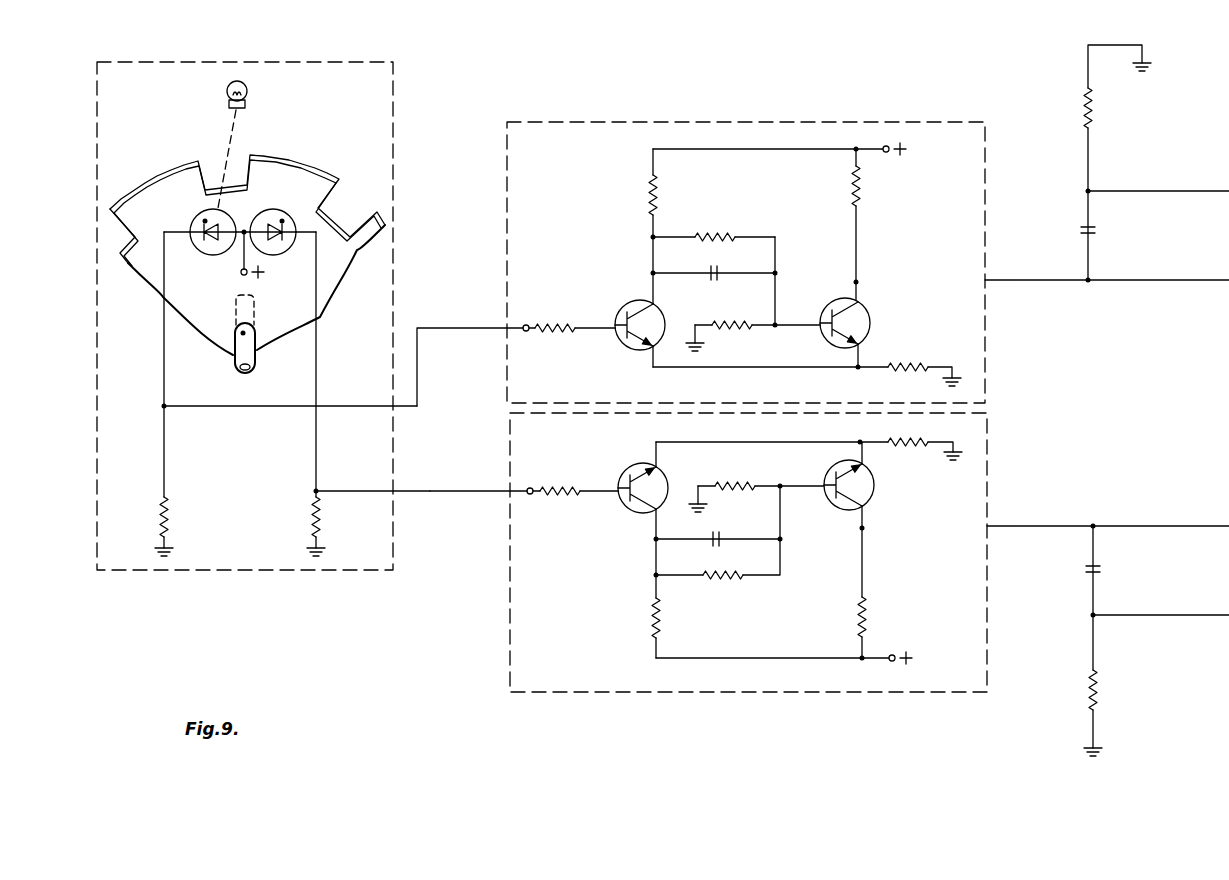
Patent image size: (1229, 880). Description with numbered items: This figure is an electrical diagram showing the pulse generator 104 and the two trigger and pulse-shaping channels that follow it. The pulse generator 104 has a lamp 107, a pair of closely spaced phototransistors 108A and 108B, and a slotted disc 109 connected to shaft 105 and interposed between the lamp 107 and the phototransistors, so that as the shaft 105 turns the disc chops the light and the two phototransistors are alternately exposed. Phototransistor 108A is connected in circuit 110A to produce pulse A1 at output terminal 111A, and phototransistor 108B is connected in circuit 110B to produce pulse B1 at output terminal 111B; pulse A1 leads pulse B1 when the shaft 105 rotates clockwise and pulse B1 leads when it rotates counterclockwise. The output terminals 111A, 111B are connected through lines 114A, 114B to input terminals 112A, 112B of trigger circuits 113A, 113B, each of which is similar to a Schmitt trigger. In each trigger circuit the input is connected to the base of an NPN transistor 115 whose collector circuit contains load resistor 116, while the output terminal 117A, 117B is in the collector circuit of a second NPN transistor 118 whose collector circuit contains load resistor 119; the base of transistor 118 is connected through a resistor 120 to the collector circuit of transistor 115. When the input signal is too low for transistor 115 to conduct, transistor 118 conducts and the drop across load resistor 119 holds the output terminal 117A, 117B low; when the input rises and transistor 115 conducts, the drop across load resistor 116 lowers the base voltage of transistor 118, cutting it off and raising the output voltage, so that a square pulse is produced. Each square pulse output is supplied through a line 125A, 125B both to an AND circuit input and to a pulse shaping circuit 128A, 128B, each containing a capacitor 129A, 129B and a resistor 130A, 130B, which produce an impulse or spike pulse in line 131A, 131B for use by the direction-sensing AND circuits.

The pulse generator 104 is at (393, 112).
The shaft 105 is at (233, 360).
The lamp 107 is at (250, 89).
The phototransistor 108A is at (192, 218).
The phototransistor 108B is at (282, 192).
The slotted disc 109 is at (163, 172).
The circuit 110A is at (162, 368).
The circuit 110B is at (317, 342).
The output terminal 111A is at (396, 404).
The output terminal 111B is at (395, 493).
The input terminal 112A is at (508, 325).
The input terminal 112B is at (508, 492).
The trigger circuit 113A is at (822, 120).
The trigger circuit 113B is at (850, 693).
The line 114A is at (433, 327).
The line 114B is at (458, 488).
The NPN transistor 115 is at (653, 311).
The load resistor 116 is at (657, 188).
The output terminal 117A is at (990, 278).
The output terminal 117B is at (990, 527).
The NPN transistor 118 is at (860, 312).
The load resistor 119 is at (862, 187).
The resistor 120 is at (718, 232).
The line 125A is at (1062, 281).
The line 125B is at (1042, 530).
The pulse shaping circuit 128A is at (1077, 163).
The pulse shaping circuit 128B is at (1085, 605).
The capacitor 129A is at (1100, 230).
The capacitor 129B is at (1102, 568).
The resistor 130A is at (1097, 106).
The resistor 130B is at (1100, 675).
The line 131A is at (1122, 190).
The line 131B is at (1130, 615).